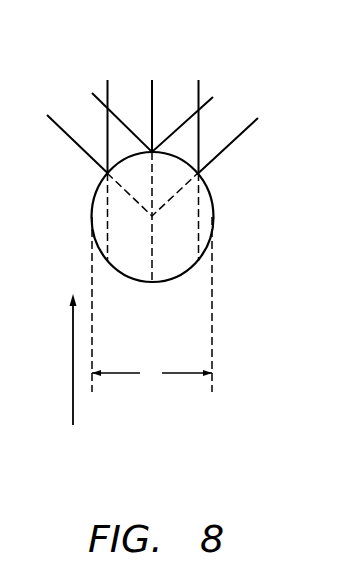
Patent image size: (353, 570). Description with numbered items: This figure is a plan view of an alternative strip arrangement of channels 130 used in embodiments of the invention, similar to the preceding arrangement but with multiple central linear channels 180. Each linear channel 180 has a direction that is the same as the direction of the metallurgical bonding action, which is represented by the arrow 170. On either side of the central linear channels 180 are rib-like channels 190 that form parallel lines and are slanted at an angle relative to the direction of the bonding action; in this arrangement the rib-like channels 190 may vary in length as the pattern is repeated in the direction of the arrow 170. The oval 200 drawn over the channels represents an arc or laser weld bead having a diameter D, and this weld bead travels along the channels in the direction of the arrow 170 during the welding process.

The channels 130 is at (102, 90).
The linear channel 180 is at (109, 88).
The rib-like channels 190 is at (207, 103).
The oval 200 is at (182, 274).
The arrow 170 is at (72, 402).
The diameter D is at (152, 373).